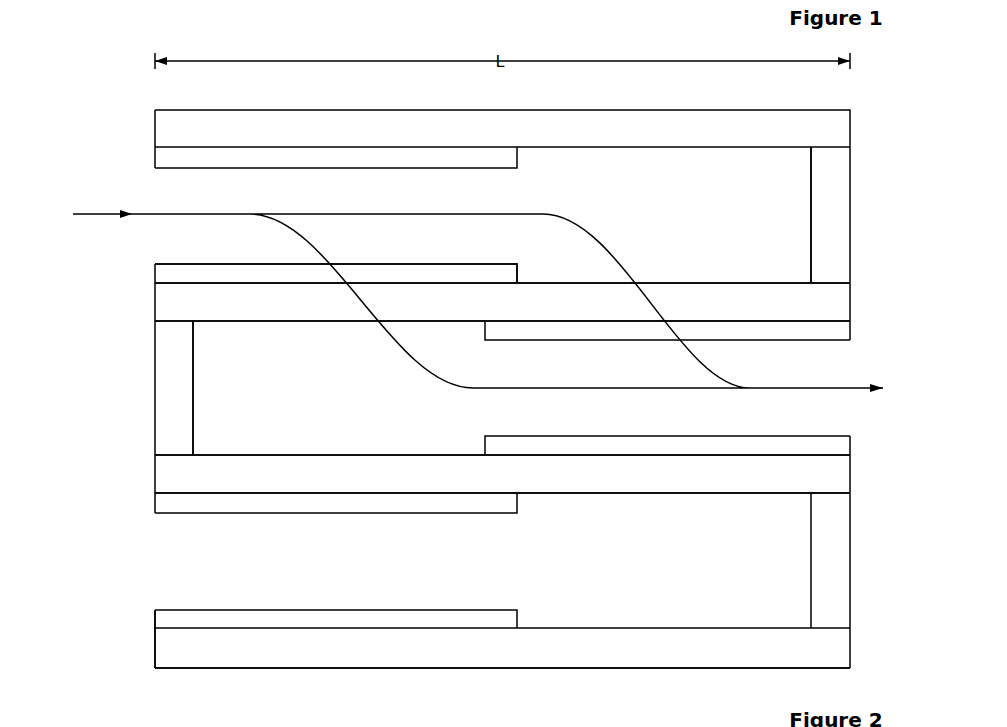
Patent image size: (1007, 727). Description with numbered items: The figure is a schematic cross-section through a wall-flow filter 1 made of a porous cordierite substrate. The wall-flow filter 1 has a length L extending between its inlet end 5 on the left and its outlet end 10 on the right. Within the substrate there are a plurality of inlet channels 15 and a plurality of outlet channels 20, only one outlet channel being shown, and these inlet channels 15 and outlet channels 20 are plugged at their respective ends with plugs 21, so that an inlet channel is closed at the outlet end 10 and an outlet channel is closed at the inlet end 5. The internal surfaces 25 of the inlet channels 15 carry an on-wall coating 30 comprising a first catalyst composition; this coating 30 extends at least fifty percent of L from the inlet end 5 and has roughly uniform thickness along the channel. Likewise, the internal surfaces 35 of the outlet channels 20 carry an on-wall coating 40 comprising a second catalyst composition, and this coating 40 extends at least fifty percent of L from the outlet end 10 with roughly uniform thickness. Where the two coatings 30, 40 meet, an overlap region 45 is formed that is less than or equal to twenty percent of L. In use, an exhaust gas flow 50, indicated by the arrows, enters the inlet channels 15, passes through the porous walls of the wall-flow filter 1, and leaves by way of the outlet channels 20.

The wall-flow filter 1 is at (808, 110).
The inlet end 5 is at (146, 303).
The outlet end 10 is at (856, 476).
The inlet channels 15 is at (883, 540).
The outlet channels 20 is at (220, 388).
The plugs 21 is at (166, 348).
The internal surfaces of the inlet channels 25 is at (393, 697).
The on-wall coating 30 is at (210, 610).
The internal surfaces of the outlet channels 35 is at (587, 455).
The on-wall coating 40 is at (790, 340).
The overlap region 45 is at (504, 475).
The exhaust gas flow 50 is at (93, 205).